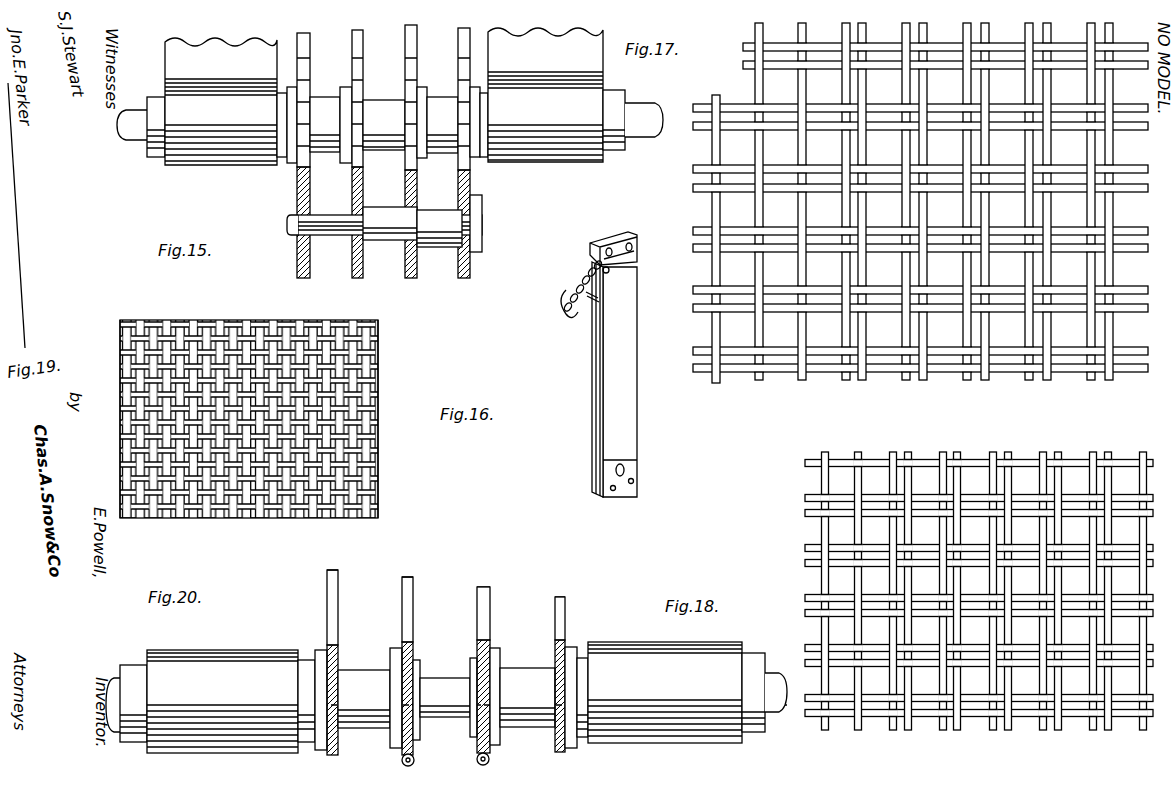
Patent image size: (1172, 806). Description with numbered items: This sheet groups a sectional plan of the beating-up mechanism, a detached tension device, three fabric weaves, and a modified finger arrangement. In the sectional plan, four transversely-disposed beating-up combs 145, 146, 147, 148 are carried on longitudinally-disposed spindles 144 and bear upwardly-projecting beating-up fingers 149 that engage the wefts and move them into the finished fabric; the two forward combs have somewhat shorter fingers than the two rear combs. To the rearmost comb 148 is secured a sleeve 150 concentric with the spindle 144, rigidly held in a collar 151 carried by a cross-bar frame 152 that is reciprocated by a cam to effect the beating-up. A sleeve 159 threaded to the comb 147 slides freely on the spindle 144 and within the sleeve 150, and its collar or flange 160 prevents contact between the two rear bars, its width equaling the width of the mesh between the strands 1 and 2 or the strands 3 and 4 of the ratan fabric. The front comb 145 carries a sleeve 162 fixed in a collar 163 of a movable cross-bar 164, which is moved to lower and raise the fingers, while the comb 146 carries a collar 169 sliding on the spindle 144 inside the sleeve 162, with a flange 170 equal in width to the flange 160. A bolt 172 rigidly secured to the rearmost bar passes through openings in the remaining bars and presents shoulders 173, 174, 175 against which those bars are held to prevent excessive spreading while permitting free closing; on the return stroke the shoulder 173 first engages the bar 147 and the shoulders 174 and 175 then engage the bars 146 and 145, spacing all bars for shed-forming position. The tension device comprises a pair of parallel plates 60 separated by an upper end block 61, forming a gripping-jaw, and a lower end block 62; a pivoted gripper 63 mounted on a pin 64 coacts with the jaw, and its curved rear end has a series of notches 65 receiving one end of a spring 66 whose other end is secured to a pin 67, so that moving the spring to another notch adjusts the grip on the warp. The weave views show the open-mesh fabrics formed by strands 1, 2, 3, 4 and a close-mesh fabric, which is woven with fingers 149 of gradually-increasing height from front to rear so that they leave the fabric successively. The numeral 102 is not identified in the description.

In FIG. 17, the strand 1 is at (968, 214).
In FIG. 18, the strand 1 is at (991, 581).
In FIG. 17, the strand 2 is at (925, 214).
In FIG. 18, the strand 2 is at (956, 581).
In FIG. 17, the strand 3 is at (893, 214).
In FIG. 18, the strand 3 is at (982, 581).
In FIG. 17, the strand 4 is at (913, 214).
In FIG. 18, the strand 4 is at (1009, 581).
In FIG. 16, the parallel plate 60 is at (633, 374).
In FIG. 16, the end block 61 is at (612, 235).
In FIG. 16, the end block 62 is at (604, 488).
In FIG. 16, the pivoted gripper 63 is at (633, 253).
In FIG. 16, the pin 64 is at (609, 272).
In FIG. 16, the notch 65 is at (576, 283).
In FIG. 16, the spring 66 is at (582, 310).
In FIG. 16, the pin 67 is at (598, 294).
In FIG. 15, the collar 102 is at (488, 121).
In FIG. 15, the spindle 144 is at (380, 108).
In FIG. 20, the spindle 144 is at (445, 697).
In FIG. 15, the beating-up comb 145 is at (463, 278).
In FIG. 20, the beating-up comb 145 is at (560, 752).
In FIG. 15, the beating-up comb 146 is at (412, 278).
In FIG. 20, the beating-up comb 146 is at (478, 762).
In FIG. 15, the beating-up comb 147 is at (359, 278).
In FIG. 20, the beating-up comb 147 is at (402, 765).
In FIG. 15, the beating-up comb 148 is at (305, 278).
In FIG. 20, the beating-up comb 148 is at (332, 757).
In FIG. 15, the beating-up finger 149 is at (310, 40).
In FIG. 20, the beating-up finger 149 is at (402, 596).
In FIG. 15, the sleeve 150 is at (282, 108).
In FIG. 20, the sleeve 150 is at (298, 682).
In FIG. 15, the collar 151 is at (221, 134).
In FIG. 20, the collar 151 is at (222, 700).
In FIG. 15, the frame 152 is at (221, 73).
In FIG. 15, the sleeve 159 is at (327, 124).
In FIG. 20, the sleeve 159 is at (364, 699).
In FIG. 15, the collar or flange 160 is at (346, 162).
In FIG. 20, the collar or flange 160 is at (390, 740).
In FIG. 20, the sleeve 162 is at (586, 706).
In FIG. 15, the collar 163 is at (545, 95).
In FIG. 20, the collar 163 is at (615, 680).
In FIG. 15, the movable cross-bar 164 is at (545, 67).
In FIG. 15, the collar 169 is at (444, 125).
In FIG. 20, the collar 169 is at (527, 697).
In FIG. 15, the flange 170 is at (424, 153).
In FIG. 20, the flange 170 is at (500, 738).
In FIG. 15, the bolt 172 is at (482, 232).
In FIG. 15, the shoulder 173 is at (370, 212).
In FIG. 15, the shoulder 174 is at (418, 212).
In FIG. 15, the shoulder 175 is at (472, 208).